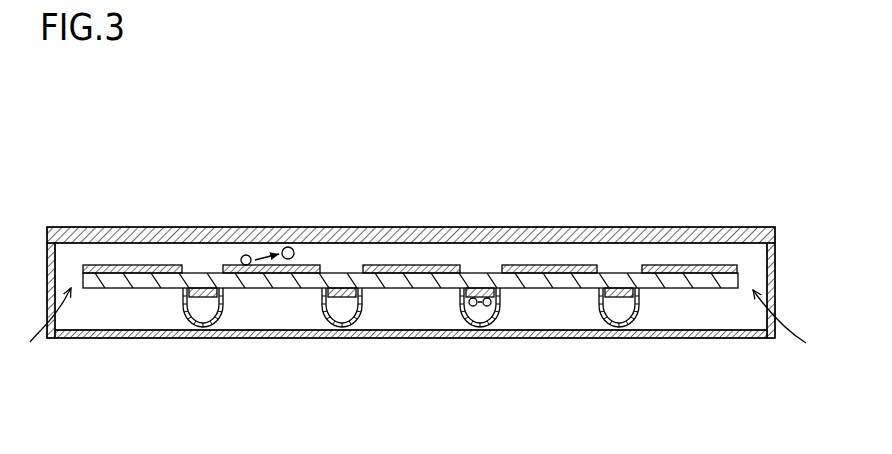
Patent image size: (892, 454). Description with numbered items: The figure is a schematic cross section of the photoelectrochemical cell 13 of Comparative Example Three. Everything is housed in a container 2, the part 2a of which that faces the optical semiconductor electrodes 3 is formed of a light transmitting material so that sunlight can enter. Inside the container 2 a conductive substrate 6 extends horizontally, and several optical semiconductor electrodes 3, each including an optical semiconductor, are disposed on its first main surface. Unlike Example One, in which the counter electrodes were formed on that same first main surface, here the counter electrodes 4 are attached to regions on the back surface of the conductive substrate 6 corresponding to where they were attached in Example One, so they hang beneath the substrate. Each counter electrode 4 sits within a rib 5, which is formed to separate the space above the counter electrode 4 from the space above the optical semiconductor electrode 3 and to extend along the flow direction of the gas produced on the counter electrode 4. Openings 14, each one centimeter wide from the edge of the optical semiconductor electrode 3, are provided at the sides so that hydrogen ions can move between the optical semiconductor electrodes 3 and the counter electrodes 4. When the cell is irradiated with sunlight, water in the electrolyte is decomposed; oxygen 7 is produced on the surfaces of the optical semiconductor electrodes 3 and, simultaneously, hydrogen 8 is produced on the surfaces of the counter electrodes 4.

The photoelectrochemical cell 13 is at (731, 119).
The container 2 is at (777, 269).
The part of the container 2a is at (712, 227).
The optical semiconductor electrode 3 is at (125, 270).
The counter electrode 4 is at (204, 297).
The rib 5 is at (197, 328).
The conductive substrate 6 is at (685, 283).
The oxygen 7 is at (296, 254).
The hydrogen 8 is at (480, 307).
The opening 14 is at (422, 327).